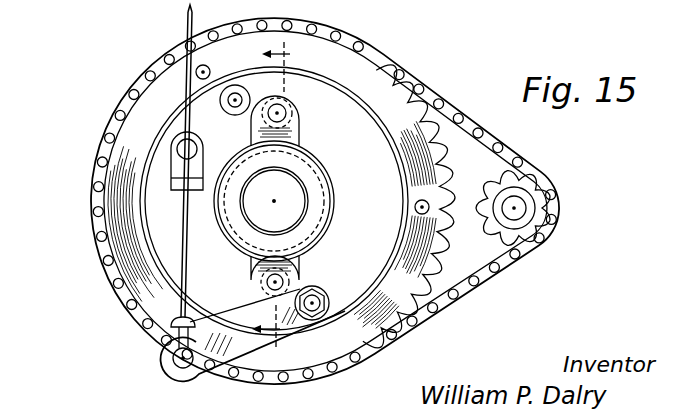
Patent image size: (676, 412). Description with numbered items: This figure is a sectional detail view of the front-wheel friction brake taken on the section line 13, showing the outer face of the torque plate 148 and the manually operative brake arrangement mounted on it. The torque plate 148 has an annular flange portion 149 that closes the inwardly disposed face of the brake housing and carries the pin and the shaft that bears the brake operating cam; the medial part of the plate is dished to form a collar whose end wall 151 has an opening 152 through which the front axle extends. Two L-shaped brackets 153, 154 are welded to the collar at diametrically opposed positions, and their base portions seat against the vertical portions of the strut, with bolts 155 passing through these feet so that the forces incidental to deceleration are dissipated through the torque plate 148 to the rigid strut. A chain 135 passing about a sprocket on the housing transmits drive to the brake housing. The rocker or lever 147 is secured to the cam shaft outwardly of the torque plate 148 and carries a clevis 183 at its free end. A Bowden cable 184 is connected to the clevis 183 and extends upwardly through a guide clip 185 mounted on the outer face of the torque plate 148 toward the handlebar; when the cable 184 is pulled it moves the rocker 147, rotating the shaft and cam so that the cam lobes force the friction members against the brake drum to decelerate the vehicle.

The section line 13- 13 is at (262, 193).
The drive chain 135 is at (372, 50).
The lever 147 is at (212, 352).
The torque plate 148 is at (156, 236).
The flange portion 149 is at (358, 131).
The end wall 151 is at (297, 165).
The opening 152 is at (303, 193).
The L-shaped bracket 153 is at (300, 131).
The L-shaped bracket 154 is at (290, 265).
The bolt 155 is at (285, 112).
The clevis 183 is at (177, 340).
The Bowden cable 184 is at (189, 95).
The guide clip 185 is at (200, 162).